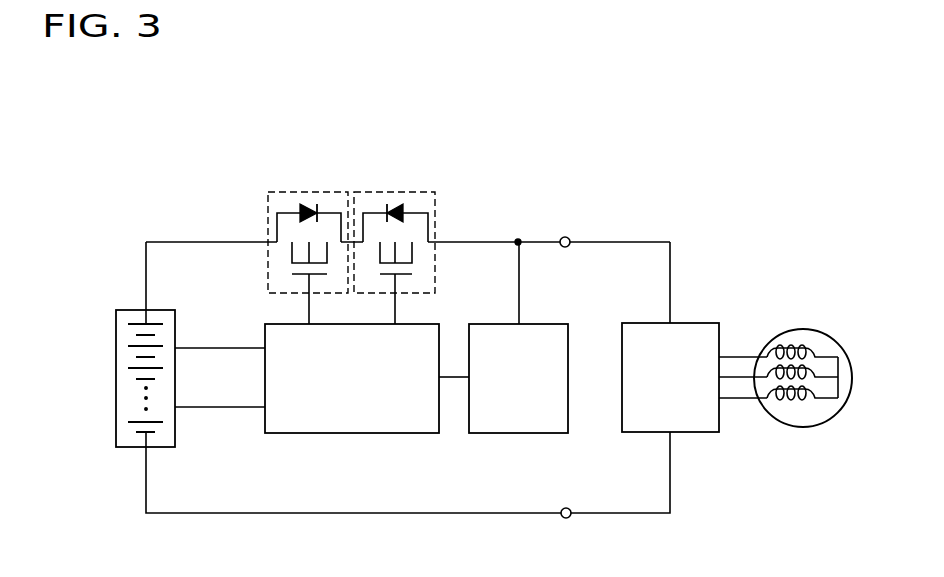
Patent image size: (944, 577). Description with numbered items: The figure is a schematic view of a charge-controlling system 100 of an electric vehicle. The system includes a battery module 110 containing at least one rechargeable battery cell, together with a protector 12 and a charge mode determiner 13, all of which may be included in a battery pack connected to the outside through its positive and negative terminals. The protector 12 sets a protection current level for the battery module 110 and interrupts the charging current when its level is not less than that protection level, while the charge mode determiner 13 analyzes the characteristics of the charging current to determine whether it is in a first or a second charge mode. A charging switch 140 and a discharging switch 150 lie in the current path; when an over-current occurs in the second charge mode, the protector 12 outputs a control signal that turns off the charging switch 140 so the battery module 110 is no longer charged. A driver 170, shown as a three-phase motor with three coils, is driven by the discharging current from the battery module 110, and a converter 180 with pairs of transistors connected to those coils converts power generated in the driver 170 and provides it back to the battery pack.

The charge-controlling system 100 is at (770, 172).
The battery module 110 is at (160, 309).
The protector 12 is at (420, 323).
The charge mode determiner 13 is at (527, 323).
The charging switch 140 is at (308, 191).
The discharging switch 150 is at (393, 191).
The driver 170 is at (802, 328).
The converter 180 is at (680, 323).